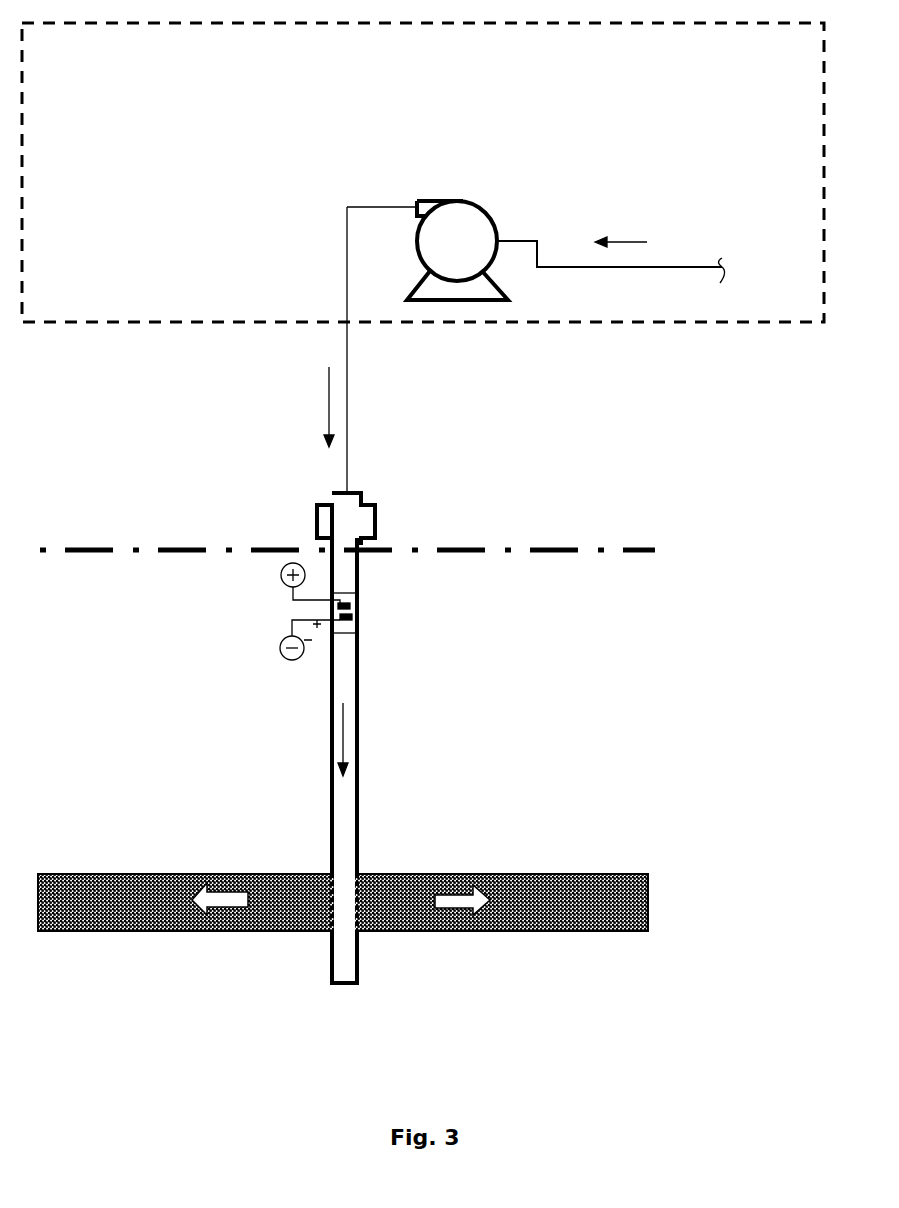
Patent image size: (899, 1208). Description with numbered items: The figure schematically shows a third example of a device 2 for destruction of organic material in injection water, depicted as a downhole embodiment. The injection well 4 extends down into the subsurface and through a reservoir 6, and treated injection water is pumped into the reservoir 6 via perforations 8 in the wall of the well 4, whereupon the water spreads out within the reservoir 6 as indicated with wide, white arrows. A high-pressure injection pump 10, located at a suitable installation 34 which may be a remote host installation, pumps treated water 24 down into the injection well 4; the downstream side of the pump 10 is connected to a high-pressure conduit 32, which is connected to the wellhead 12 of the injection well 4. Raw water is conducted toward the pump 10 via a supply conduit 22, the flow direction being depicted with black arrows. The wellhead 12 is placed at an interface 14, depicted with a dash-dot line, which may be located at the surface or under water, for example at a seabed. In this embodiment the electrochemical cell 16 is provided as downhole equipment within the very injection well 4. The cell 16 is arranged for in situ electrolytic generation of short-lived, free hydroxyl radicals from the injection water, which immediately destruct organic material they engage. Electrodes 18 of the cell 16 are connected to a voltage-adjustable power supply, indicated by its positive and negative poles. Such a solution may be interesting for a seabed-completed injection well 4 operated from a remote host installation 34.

The device 2 is at (458, 617).
The injection well 4 is at (357, 785).
The reservoir 6 is at (570, 886).
The perforations 8 is at (330, 905).
The high-pressure injection pump 10 is at (460, 227).
The wellhead 12 is at (360, 523).
The interface 14 is at (65, 548).
The electrochemical cell 16 is at (340, 579).
The electrodes 18 is at (352, 610).
The supply conduit 22 is at (697, 267).
The treated injection water 24 is at (345, 732).
The high-pressure conduit 32 is at (373, 207).
The installation 34 is at (673, 322).